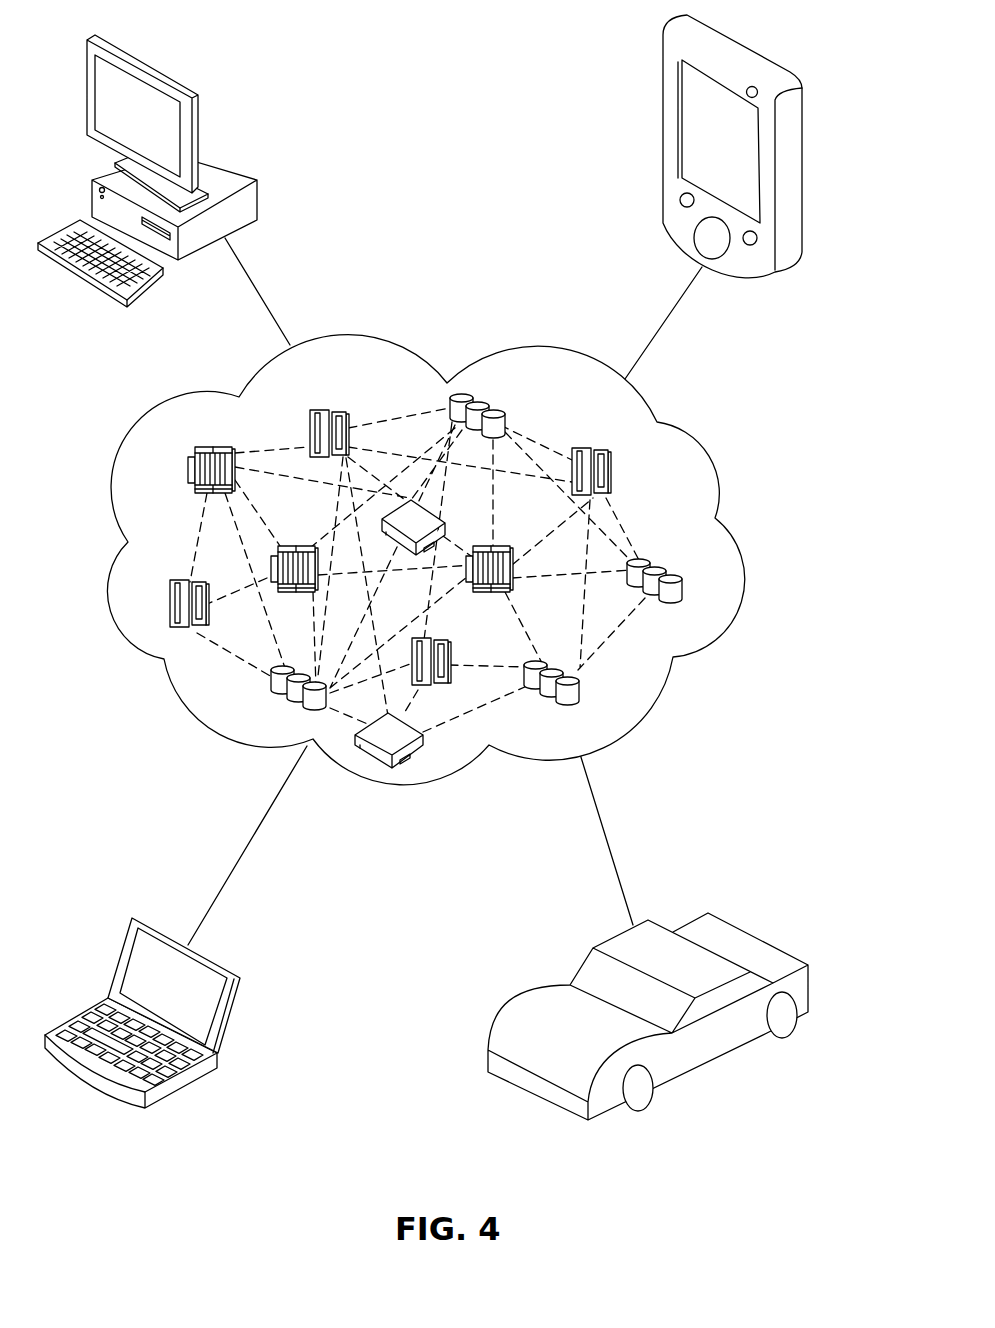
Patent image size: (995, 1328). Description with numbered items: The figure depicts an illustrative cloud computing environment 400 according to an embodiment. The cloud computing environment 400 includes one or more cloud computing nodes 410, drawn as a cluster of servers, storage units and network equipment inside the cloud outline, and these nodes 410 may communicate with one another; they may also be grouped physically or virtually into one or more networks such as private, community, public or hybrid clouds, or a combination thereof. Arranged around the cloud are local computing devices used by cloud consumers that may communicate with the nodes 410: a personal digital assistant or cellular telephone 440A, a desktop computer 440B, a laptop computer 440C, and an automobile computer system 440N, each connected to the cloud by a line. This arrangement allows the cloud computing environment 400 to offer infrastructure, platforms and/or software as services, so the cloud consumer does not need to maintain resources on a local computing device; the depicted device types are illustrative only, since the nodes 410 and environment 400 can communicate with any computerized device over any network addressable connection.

The cloud computing environment 400 is at (482, 560).
The cloud computing nodes 410 is at (657, 497).
The personal digital assistant or cellular telephone 440A is at (663, 92).
The desktop computer 440B is at (260, 198).
The laptop computer 440C is at (243, 985).
The automobile computer system 440N is at (812, 982).